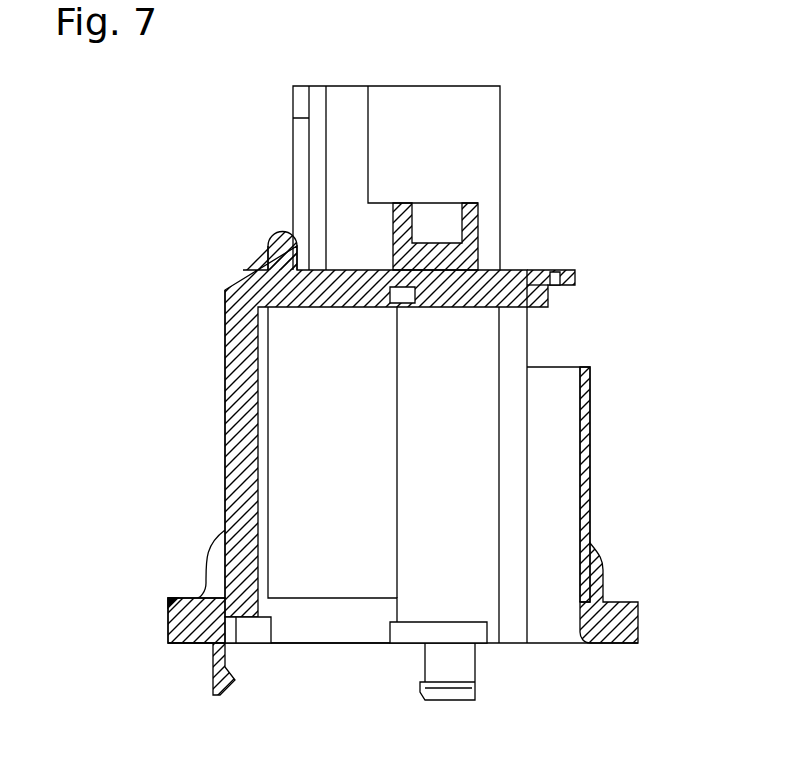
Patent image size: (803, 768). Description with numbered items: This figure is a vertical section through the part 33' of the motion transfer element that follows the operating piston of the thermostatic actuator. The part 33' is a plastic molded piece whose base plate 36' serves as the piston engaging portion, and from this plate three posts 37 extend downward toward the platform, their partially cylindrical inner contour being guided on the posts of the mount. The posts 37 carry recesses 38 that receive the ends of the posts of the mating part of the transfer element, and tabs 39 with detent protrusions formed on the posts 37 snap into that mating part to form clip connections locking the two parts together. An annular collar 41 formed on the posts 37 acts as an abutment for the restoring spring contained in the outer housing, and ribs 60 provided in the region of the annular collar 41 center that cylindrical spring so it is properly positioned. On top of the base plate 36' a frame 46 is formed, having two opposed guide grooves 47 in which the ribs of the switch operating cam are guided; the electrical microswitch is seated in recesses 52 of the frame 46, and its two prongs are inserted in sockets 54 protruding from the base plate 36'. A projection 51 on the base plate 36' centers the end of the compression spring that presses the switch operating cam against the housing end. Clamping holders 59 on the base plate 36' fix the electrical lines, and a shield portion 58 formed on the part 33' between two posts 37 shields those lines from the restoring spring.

The part of the transfer element 33' is at (456, 475).
The base plate 36' is at (400, 409).
The posts 37 is at (233, 445).
The recesses 38 is at (255, 630).
The tabs 39 is at (220, 678).
The annular collar 41 is at (345, 632).
The frame 46 is at (367, 86).
The guide grooves 47 is at (315, 97).
The projection 51 is at (280, 235).
The recesses 52 is at (448, 97).
The sockets 54 is at (440, 213).
The shield portion 58 is at (588, 480).
The clamping holders 59 is at (560, 285).
The ribs 60 is at (590, 572).